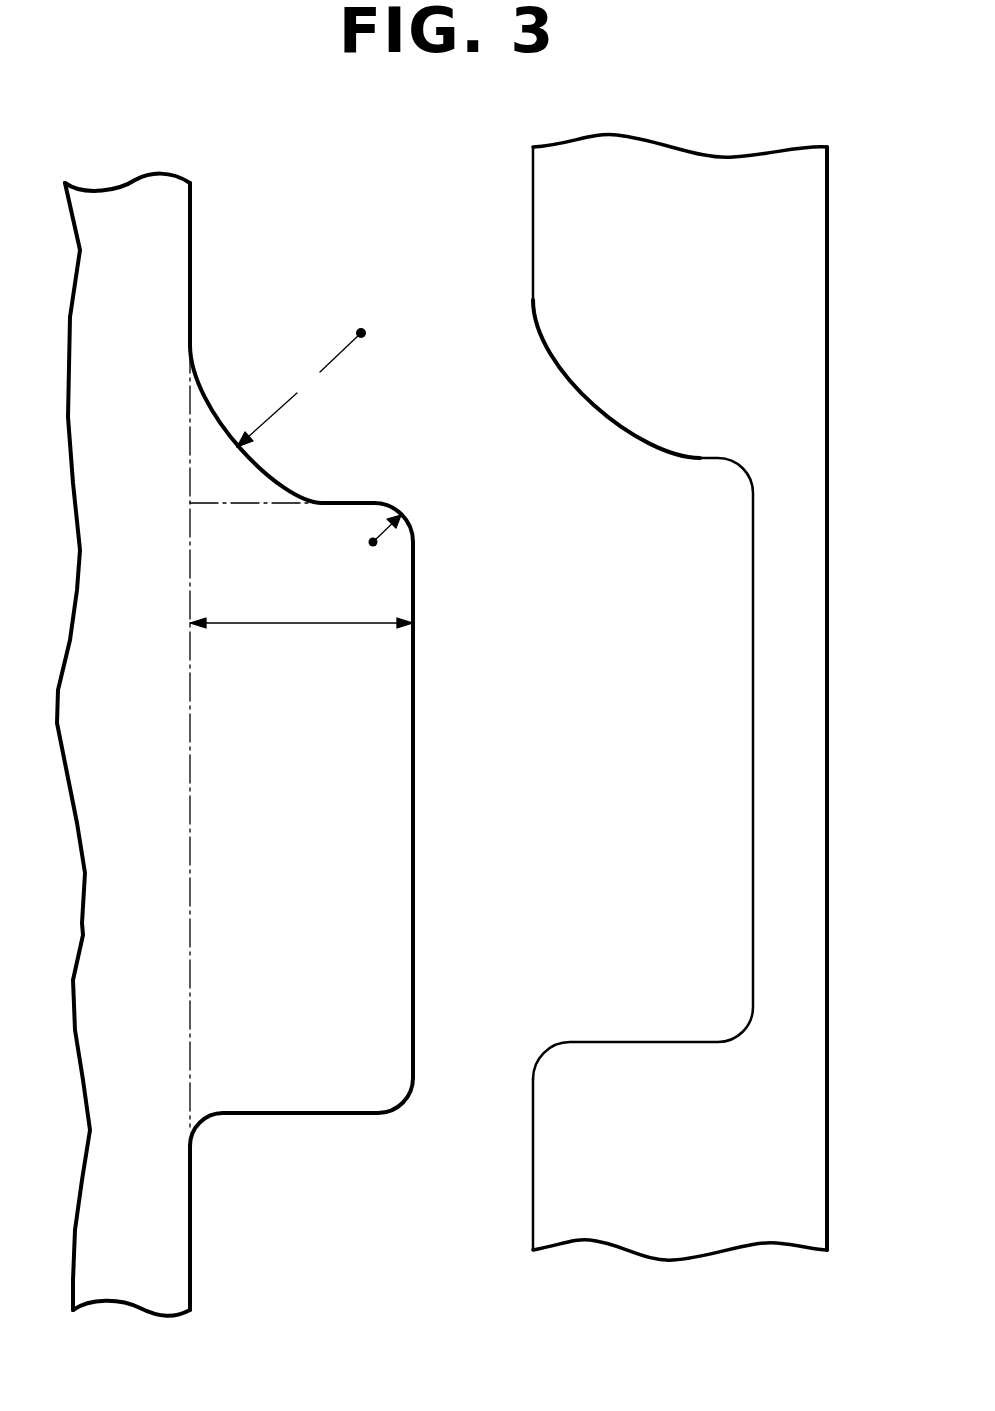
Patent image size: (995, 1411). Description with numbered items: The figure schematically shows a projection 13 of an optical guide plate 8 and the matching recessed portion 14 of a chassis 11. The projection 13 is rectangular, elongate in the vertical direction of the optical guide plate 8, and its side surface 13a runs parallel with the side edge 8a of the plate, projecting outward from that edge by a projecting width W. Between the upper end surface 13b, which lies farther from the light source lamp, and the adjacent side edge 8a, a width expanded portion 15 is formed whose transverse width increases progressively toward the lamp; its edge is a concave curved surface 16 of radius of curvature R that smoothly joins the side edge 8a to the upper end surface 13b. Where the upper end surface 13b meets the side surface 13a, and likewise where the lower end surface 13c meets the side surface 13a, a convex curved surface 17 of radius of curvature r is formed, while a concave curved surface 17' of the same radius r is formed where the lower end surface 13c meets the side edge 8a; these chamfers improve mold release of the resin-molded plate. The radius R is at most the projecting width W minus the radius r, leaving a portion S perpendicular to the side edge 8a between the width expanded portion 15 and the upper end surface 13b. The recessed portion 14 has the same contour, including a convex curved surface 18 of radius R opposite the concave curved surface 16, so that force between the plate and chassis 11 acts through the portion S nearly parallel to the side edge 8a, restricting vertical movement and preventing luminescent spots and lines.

The optical guide plate 8 is at (150, 222).
The side edge 8a is at (192, 267).
The chassis 11 is at (697, 698).
The projection 13 is at (349, 775).
The side surface 13a is at (417, 725).
The upper end surface 13b is at (297, 490).
The lower end surface 13c is at (355, 1118).
The recessed portion 14 is at (753, 805).
The width expanded portion 15 is at (202, 467).
The concave curved surface 16 is at (213, 413).
The convex curved surface 17 is at (432, 817).
The concave curved surface 17' is at (240, 1163).
The convex curved surface 18 is at (570, 403).
The radius of curvature R is at (301, 387).
The radius of curvature r is at (382, 525).
The portion perpendicular to the side edge S is at (360, 502).
The projecting width W is at (301, 608).